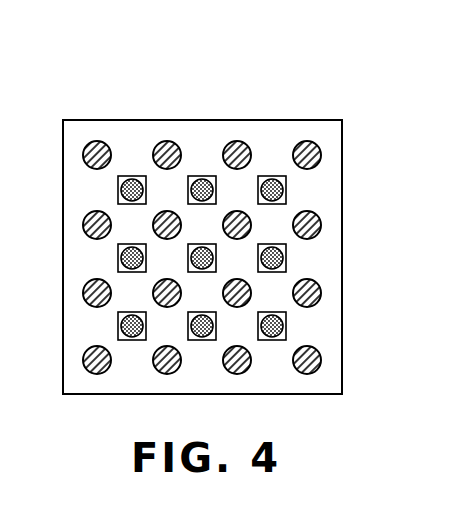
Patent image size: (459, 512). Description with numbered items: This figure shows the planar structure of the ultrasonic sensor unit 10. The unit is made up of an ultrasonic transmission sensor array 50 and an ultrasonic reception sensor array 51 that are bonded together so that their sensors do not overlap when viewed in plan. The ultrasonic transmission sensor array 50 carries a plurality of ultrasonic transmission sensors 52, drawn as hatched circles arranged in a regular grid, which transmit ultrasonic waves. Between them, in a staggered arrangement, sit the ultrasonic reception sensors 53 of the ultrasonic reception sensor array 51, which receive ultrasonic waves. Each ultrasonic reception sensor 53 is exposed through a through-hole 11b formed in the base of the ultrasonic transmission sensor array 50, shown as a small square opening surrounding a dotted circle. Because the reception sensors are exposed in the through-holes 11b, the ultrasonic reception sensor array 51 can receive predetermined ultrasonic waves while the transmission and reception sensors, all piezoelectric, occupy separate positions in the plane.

The ultrasonic sensor unit 10 is at (224, 204).
The ultrasonic transmission sensor array 50 is at (202, 206).
The ultrasonic reception sensor array 51 is at (180, 120).
The ultrasonic transmission sensor 52 is at (95, 152).
The ultrasonic reception sensor 53 is at (128, 182).
The through-hole 11b is at (210, 182).